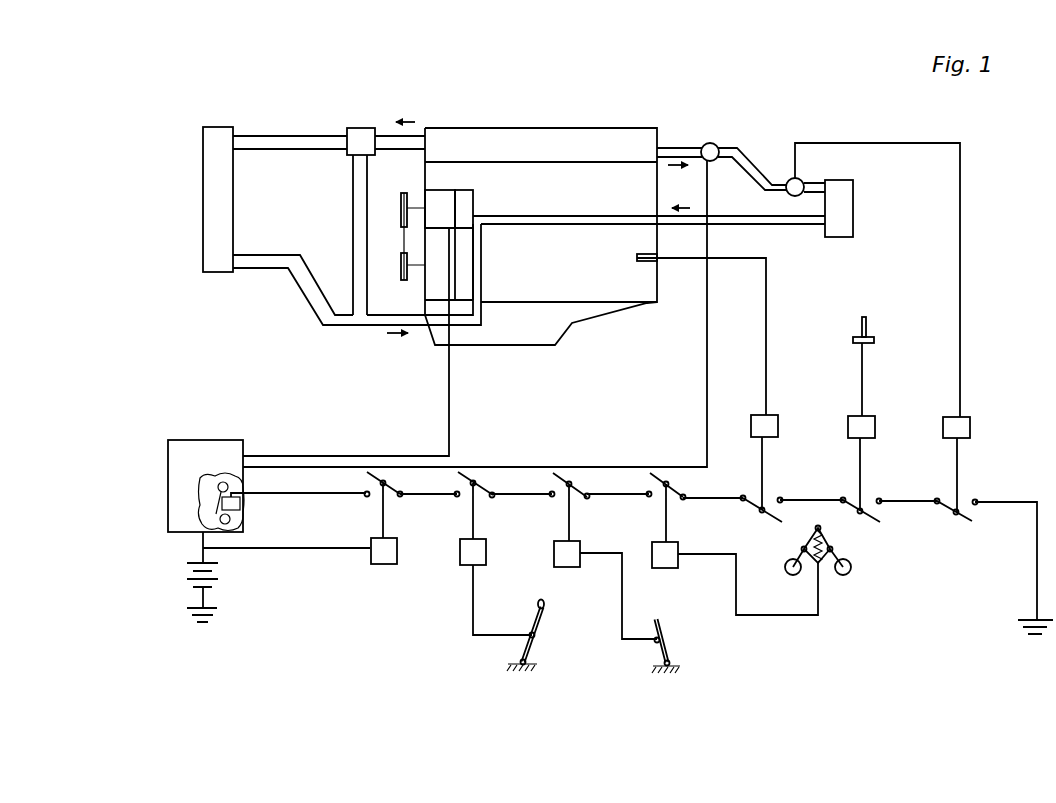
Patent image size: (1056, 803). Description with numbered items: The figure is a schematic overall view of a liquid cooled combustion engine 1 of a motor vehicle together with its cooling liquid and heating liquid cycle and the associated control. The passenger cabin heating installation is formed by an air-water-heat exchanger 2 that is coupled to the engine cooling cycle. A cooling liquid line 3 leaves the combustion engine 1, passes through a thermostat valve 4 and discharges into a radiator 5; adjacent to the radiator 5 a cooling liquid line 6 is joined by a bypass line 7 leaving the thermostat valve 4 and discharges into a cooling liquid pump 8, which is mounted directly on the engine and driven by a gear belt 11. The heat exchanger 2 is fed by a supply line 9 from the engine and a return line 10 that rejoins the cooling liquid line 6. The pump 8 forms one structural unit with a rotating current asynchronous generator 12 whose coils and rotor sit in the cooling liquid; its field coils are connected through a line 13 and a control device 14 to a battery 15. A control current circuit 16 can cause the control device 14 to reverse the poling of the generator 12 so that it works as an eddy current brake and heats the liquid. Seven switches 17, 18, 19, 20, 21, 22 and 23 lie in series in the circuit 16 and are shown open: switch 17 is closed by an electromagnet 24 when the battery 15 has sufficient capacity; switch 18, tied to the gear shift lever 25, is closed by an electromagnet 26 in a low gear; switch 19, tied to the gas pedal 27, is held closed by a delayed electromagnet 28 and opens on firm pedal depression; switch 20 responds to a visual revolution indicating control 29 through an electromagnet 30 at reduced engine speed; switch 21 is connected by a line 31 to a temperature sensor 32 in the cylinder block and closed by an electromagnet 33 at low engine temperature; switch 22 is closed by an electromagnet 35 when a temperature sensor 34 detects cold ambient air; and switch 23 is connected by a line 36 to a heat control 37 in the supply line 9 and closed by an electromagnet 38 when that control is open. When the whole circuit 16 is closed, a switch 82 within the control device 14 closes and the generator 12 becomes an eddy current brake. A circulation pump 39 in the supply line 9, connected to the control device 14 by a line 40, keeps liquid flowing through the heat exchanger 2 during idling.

The combustion engine 1 is at (566, 135).
The air-water-heat exchanger 2 is at (853, 195).
The cooling liquid line 3 is at (303, 136).
The thermostat valve 4 is at (361, 128).
The radiator 5 is at (203, 183).
The cooling liquid line 6 is at (303, 285).
The bypass line 7 is at (353, 187).
The cooling liquid pump 8 is at (465, 190).
The supply line 9 is at (678, 147).
The return line 10 is at (540, 225).
The gear belt 11 is at (401, 232).
The rotating current asynchronous generator 12 is at (437, 190).
The line 13 is at (449, 397).
The control device 14 is at (168, 451).
The battery 15 is at (214, 580).
The control current circuit 16 is at (299, 494).
The switch 17 is at (365, 498).
The switch 18 is at (465, 496).
The switch 19 is at (563, 496).
The switch 20 is at (661, 496).
The switch 21 is at (758, 511).
The switch 22 is at (878, 520).
The switch 23 is at (977, 520).
The electromagnet 24 is at (380, 562).
The gear shift lever 25 is at (536, 613).
The electromagnet 26 is at (468, 563).
The gas pedal 27 is at (662, 645).
The electromagnet 28 is at (573, 565).
The visual revolution indicating control 29 is at (835, 572).
The electromagnet 30 is at (673, 566).
The line 31 is at (766, 366).
The temperature sensor 32 is at (648, 262).
The electromagnet 33 is at (773, 437).
The temperature sensor 34 is at (874, 329).
The electromagnet 35 is at (868, 438).
The line 36 is at (960, 328).
The heat control 37 is at (789, 178).
The electromagnet 38 is at (962, 438).
The circulation pump 39 is at (714, 143).
The line 40 is at (707, 377).
The switch 82 is at (197, 524).